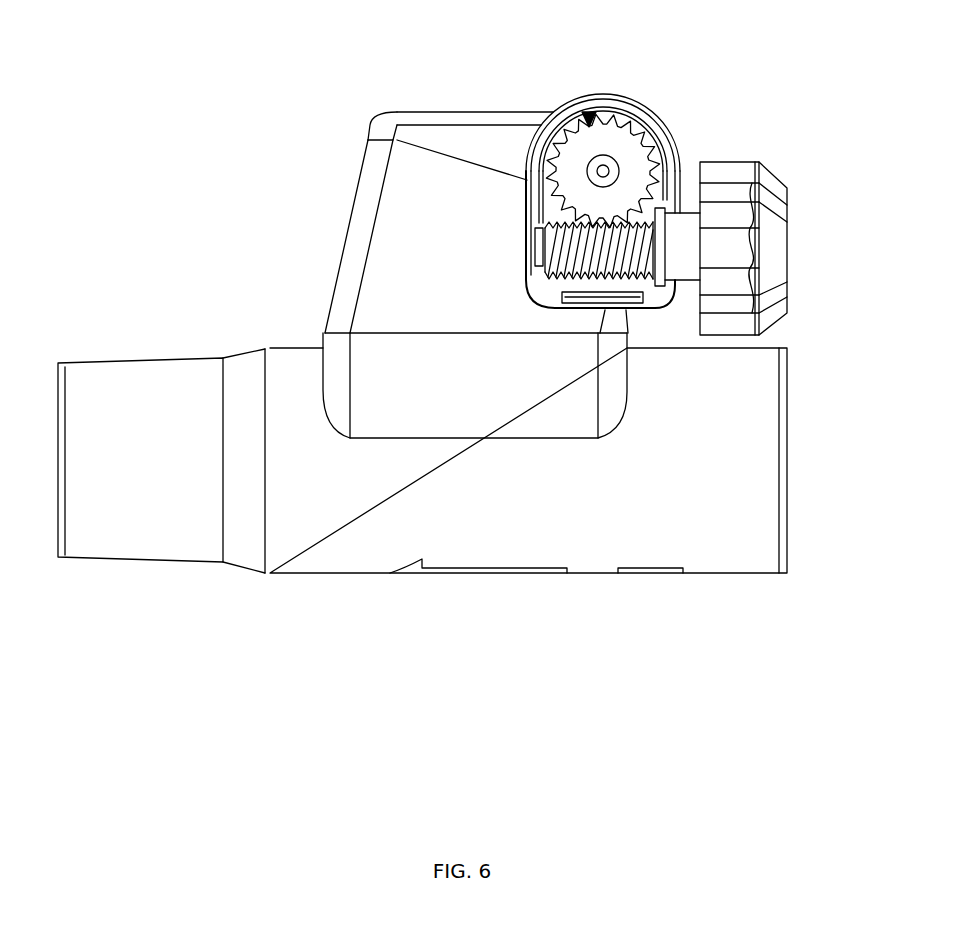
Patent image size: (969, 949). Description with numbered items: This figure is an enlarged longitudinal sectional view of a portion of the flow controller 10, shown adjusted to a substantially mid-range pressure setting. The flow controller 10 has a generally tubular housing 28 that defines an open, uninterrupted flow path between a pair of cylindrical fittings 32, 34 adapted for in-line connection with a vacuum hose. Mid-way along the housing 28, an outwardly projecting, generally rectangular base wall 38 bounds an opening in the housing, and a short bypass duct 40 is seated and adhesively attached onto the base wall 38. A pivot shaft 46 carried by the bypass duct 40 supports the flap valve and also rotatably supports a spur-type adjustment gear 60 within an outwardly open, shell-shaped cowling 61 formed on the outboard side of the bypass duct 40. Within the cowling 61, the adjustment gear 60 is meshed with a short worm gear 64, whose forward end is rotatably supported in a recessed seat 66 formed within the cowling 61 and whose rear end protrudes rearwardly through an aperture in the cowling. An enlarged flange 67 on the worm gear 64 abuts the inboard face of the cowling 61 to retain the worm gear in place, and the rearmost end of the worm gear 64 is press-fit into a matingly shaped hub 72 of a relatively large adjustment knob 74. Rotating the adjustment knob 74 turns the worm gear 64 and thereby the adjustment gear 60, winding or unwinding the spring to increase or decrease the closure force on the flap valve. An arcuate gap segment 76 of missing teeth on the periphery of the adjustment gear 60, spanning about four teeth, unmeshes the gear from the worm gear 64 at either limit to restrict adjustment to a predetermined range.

The flow controller 10 is at (287, 690).
The tubular housing 28 is at (487, 550).
The cylindrical fitting 32 is at (87, 375).
The cylindrical fitting 34 is at (770, 527).
The base wall 38 is at (560, 413).
The bypass duct 40 is at (338, 273).
The pivot shaft 46 is at (598, 172).
The adjustment gear 60 is at (625, 158).
The cowling 61 is at (643, 110).
The worm gear 64 is at (565, 265).
The recessed seat 66 is at (538, 245).
The flange 67 is at (660, 272).
The hub 72 is at (688, 228).
The adjustment knob 74 is at (780, 182).
The arcuate gap segment 76 is at (589, 112).